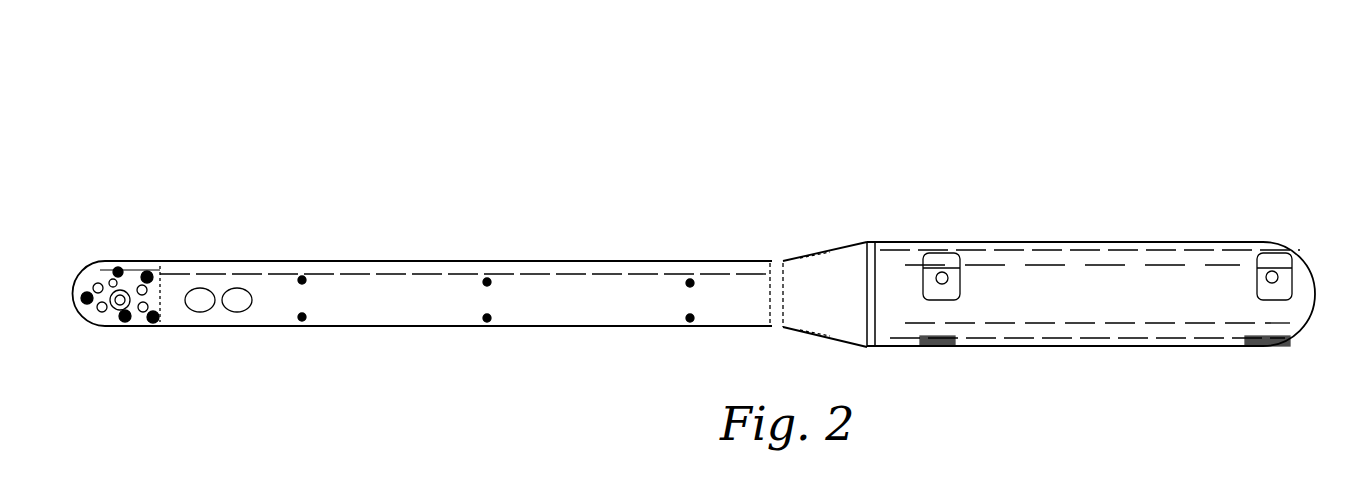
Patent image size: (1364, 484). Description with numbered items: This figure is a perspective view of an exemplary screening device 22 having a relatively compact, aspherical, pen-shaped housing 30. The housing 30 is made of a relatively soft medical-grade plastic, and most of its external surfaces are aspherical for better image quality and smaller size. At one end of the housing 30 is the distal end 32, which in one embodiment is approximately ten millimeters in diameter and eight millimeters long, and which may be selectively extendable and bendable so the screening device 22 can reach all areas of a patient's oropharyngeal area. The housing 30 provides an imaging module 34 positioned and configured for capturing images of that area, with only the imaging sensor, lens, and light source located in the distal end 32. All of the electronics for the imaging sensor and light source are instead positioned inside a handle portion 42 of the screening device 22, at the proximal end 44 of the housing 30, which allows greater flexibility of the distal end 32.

The screening device 22 is at (1217, 97).
The housing 30 is at (842, 188).
The distal end 32 is at (100, 247).
The imaging module 34 is at (125, 330).
The handle portion 42 is at (1178, 312).
The proximal end 44 is at (1282, 227).